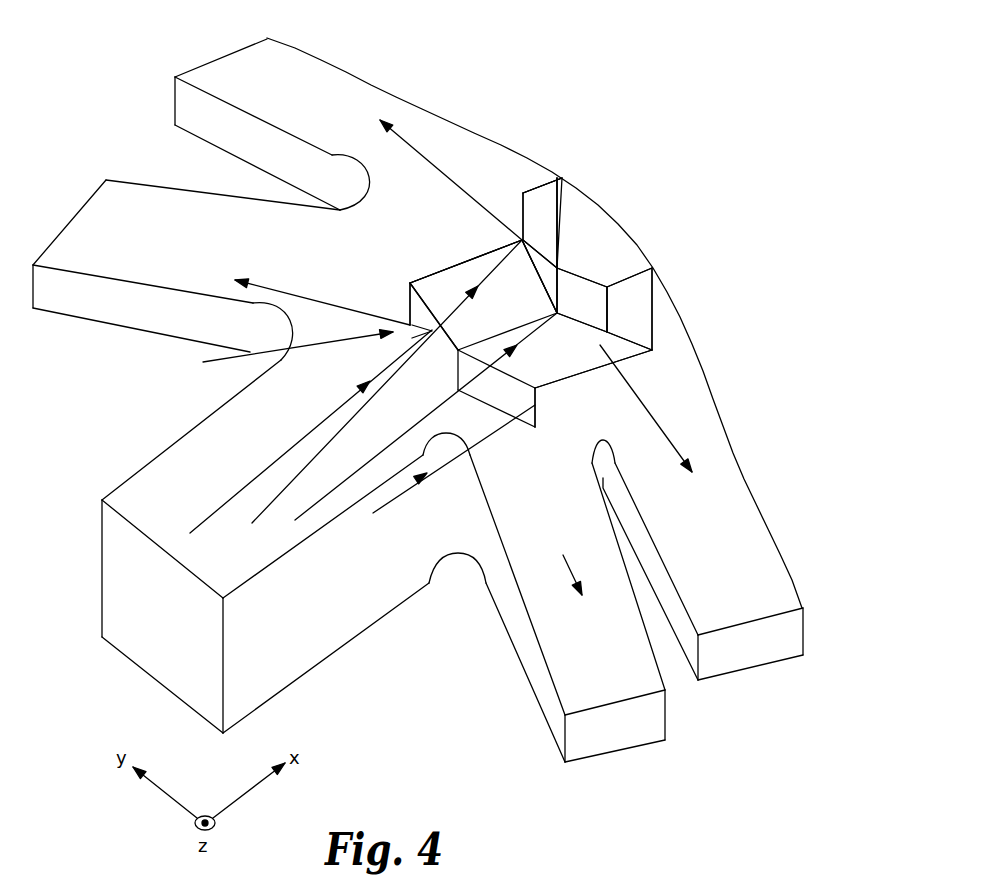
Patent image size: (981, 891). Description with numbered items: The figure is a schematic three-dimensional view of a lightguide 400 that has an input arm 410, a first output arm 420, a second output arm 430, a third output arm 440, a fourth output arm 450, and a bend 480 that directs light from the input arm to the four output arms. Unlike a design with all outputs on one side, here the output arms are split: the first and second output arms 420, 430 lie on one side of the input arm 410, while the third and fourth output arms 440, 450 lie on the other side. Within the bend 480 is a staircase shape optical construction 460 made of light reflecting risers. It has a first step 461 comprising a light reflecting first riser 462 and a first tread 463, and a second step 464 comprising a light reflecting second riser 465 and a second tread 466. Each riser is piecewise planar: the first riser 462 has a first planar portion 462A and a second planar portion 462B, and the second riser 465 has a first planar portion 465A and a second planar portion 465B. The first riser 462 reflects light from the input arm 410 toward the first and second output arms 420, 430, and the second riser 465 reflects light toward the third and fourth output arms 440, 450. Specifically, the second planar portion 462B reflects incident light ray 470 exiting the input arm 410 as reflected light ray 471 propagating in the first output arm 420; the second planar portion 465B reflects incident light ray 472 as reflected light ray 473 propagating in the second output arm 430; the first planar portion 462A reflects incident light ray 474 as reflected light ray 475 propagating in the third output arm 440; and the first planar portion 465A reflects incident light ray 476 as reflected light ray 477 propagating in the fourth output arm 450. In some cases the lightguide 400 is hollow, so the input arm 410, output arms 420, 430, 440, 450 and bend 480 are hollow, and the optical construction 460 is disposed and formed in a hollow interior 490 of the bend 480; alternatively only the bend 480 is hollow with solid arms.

The lightguide 400 is at (667, 130).
The input arm 410 is at (157, 650).
The first output arm 420 is at (552, 712).
The second output arm 430 is at (723, 658).
The third output arm 440 is at (60, 295).
The fourth output arm 450 is at (190, 107).
The staircase shape optical construction 460 is at (653, 313).
The first step 461 is at (580, 380).
The light reflecting first riser 462 is at (410, 283).
The first planar portion of first riser 462A is at (410, 313).
The second planar portion of first riser 462B is at (562, 400).
The first tread 463 is at (463, 263).
The second step 464 is at (637, 328).
The light reflecting second riser 465 is at (521, 218).
The first planar portion of second riser 465A is at (531, 240).
The second planar portion of second riser 465B is at (582, 283).
The second tread 466 is at (575, 203).
The incident light ray 470 is at (391, 501).
The reflected light ray 471 is at (562, 560).
The incident light ray 472 is at (297, 521).
The reflected light ray 473 is at (667, 430).
The incident light ray 474 is at (190, 530).
The reflected light ray 475 is at (267, 287).
The incident light ray 476 is at (254, 525).
The reflected light ray 477 is at (413, 143).
The bend 480 is at (632, 226).
The hollow interior 490 is at (275, 355).